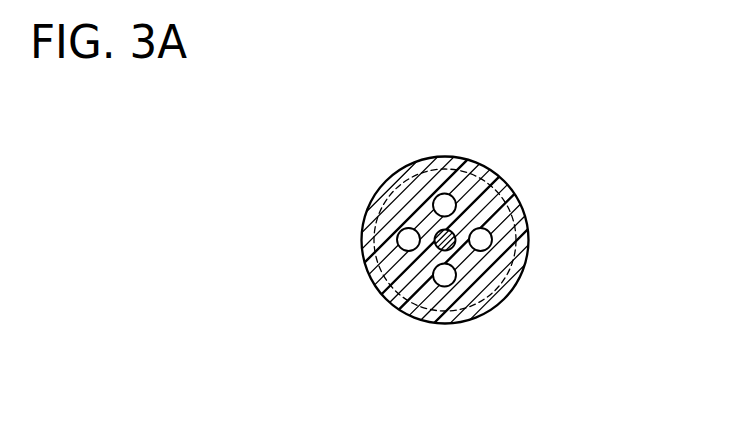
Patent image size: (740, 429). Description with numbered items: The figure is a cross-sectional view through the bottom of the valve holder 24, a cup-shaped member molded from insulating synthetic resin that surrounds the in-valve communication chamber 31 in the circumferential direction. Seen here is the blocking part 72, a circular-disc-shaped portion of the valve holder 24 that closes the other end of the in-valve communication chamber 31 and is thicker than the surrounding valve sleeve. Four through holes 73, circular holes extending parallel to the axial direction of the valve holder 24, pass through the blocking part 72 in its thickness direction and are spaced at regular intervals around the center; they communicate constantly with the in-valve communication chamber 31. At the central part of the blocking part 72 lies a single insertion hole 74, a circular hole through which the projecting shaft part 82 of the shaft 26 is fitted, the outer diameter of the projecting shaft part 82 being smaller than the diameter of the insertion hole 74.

The valve holder 24 is at (366, 141).
The shaft 26 is at (453, 250).
The projecting shaft part 82 is at (445, 240).
The in-valve communication chamber 31 is at (477, 173).
The blocking part 72 is at (527, 258).
The through holes 73 is at (444, 193).
The insertion hole 74 is at (388, 278).